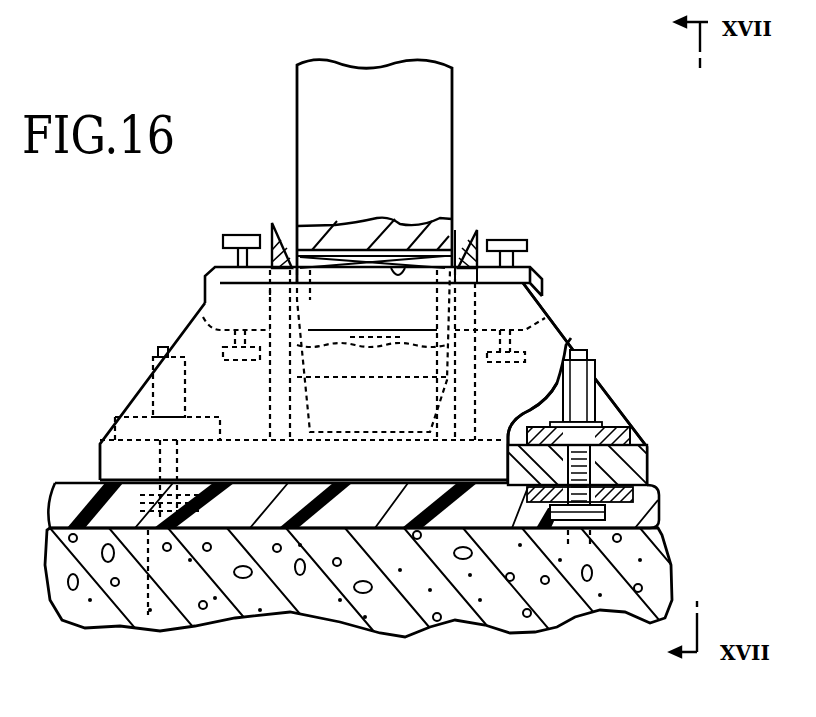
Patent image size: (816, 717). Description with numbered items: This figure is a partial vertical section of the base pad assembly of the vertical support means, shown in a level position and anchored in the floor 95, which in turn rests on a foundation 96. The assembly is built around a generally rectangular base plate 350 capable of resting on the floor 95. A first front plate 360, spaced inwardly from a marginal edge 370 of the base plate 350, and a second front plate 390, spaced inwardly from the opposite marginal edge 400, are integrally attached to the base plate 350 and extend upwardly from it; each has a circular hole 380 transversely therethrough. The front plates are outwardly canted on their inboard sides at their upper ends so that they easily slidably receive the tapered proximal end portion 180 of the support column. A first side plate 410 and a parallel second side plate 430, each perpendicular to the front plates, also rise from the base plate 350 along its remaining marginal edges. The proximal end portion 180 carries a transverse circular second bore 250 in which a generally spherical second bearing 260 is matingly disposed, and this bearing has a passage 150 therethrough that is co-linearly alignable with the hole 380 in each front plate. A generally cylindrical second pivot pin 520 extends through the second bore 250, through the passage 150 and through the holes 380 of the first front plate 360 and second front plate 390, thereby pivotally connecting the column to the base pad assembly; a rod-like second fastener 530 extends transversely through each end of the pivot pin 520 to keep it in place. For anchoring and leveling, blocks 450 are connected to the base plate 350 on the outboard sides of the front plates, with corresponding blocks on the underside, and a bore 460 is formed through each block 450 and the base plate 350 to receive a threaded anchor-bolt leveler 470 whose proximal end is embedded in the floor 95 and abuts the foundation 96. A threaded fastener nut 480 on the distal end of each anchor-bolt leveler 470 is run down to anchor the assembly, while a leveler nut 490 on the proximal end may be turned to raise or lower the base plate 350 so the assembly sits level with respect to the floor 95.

The proximal end portion 180 is at (297, 114).
The second front plate 390 is at (275, 222).
The second fastener 530 is at (226, 238).
The second pivot pin 520 is at (222, 268).
The second bearing 260 is at (312, 248).
The passage 150 is at (405, 250).
The first front plate 360 is at (462, 228).
The second bore 250 is at (478, 245).
The circular hole 380 is at (276, 292).
The anchor-bolt leveler 470 is at (162, 346).
The first side plate 410 is at (547, 322).
The second side plate 430 is at (598, 383).
The threaded fastener nut 480 is at (568, 397).
The block 450 is at (63, 515).
The marginal edge 370 is at (647, 447).
The base plate 350 is at (637, 461).
The marginal edge 400 is at (100, 466).
The floor 95 is at (387, 492).
The bore 460 is at (548, 514).
The leveler nut 490 is at (147, 622).
The foundation 96 is at (393, 630).